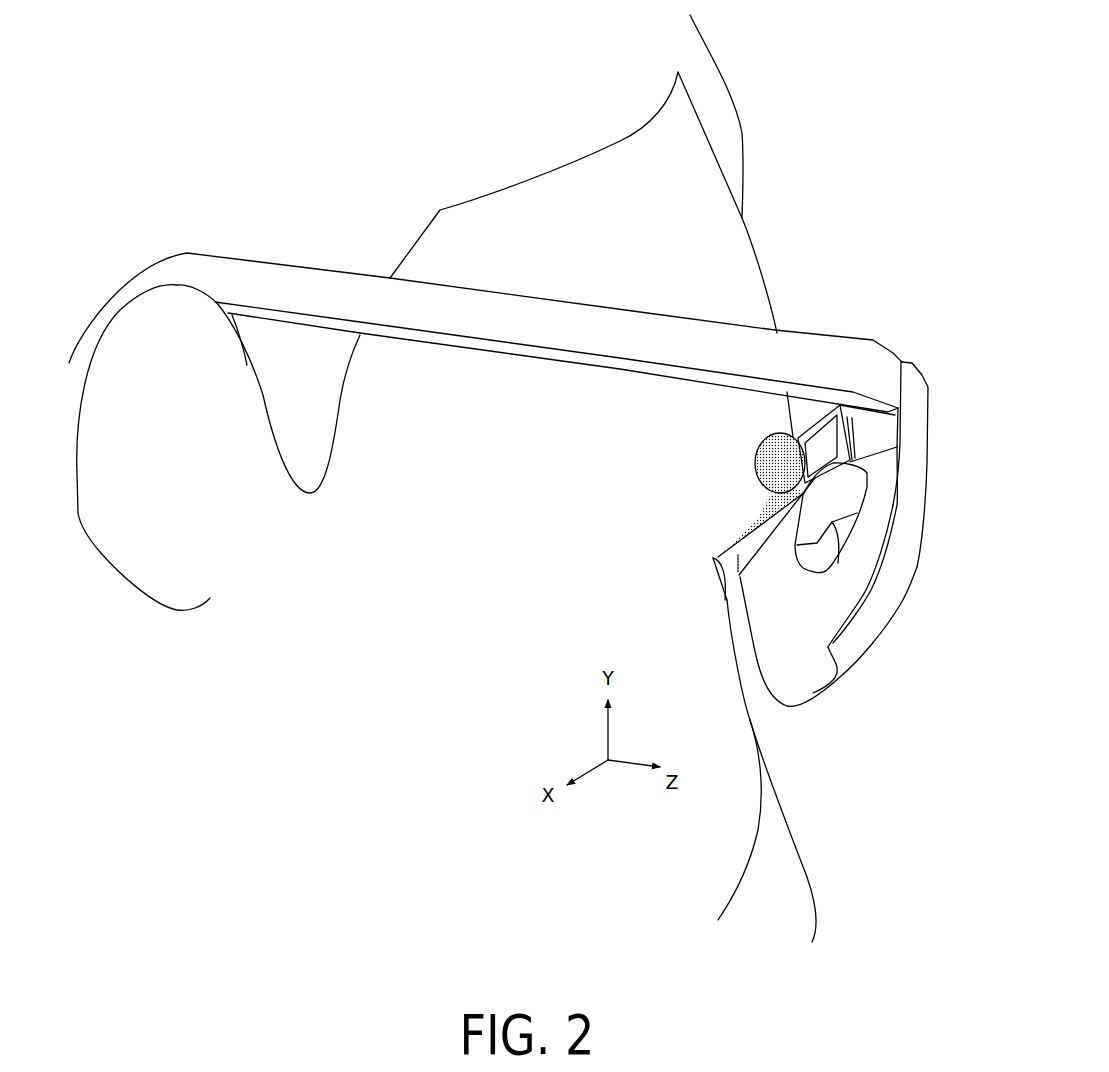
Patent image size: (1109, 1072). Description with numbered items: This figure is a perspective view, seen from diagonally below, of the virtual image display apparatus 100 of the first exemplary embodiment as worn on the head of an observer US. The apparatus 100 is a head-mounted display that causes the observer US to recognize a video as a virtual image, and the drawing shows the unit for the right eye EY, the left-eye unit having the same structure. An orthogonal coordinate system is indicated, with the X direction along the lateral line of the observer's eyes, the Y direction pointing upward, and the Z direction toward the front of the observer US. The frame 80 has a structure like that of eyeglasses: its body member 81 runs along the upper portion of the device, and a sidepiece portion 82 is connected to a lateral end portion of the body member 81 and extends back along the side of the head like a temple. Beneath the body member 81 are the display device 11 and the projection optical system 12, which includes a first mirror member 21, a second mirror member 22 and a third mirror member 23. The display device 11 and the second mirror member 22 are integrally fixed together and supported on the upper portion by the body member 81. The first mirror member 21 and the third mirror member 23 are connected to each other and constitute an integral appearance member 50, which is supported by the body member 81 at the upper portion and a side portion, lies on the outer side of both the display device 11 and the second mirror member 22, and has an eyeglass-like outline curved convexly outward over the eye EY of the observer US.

The virtual image display apparatus 100 is at (877, 318).
The frame 80 is at (738, 318).
The body member 81 is at (842, 402).
The sidepiece portion 82 is at (668, 345).
The display device 11 is at (813, 443).
The projection optical system 12 is at (933, 425).
The first mirror member 21 is at (878, 500).
The second mirror member 22 is at (860, 540).
The third mirror member 23 is at (816, 635).
The appearance member 50 is at (918, 598).
The observer US is at (773, 320).
The eye EY is at (718, 580).